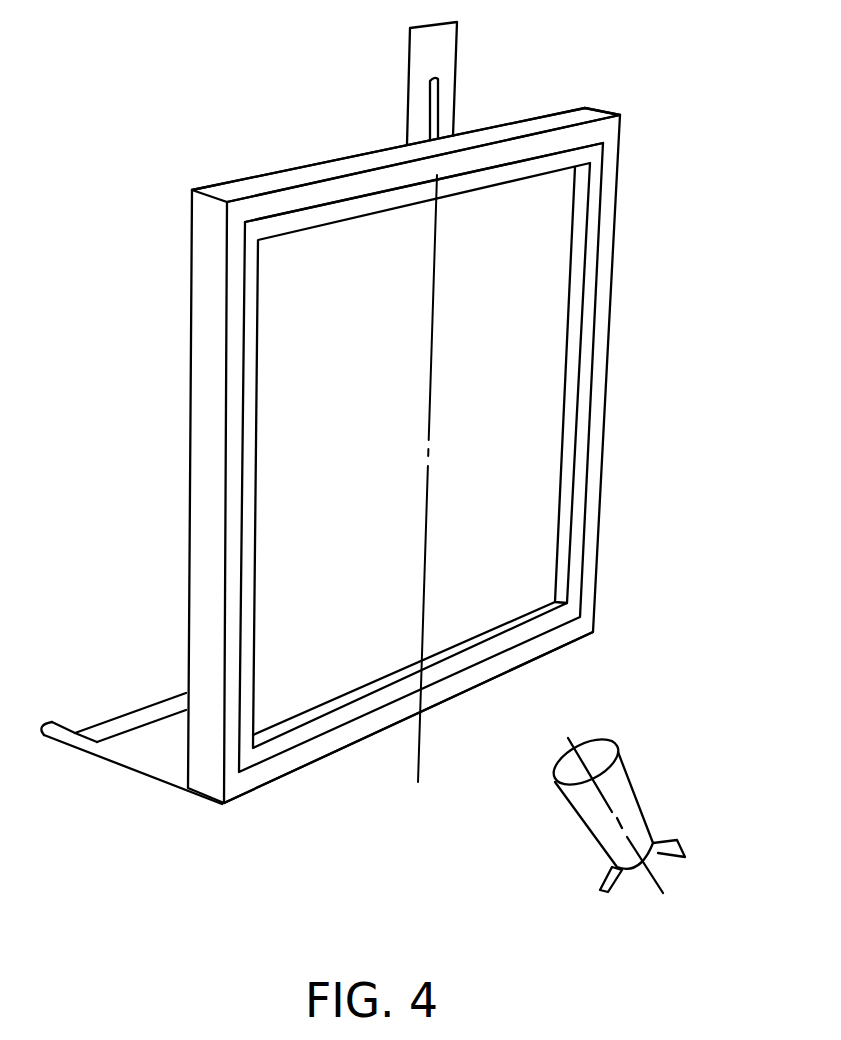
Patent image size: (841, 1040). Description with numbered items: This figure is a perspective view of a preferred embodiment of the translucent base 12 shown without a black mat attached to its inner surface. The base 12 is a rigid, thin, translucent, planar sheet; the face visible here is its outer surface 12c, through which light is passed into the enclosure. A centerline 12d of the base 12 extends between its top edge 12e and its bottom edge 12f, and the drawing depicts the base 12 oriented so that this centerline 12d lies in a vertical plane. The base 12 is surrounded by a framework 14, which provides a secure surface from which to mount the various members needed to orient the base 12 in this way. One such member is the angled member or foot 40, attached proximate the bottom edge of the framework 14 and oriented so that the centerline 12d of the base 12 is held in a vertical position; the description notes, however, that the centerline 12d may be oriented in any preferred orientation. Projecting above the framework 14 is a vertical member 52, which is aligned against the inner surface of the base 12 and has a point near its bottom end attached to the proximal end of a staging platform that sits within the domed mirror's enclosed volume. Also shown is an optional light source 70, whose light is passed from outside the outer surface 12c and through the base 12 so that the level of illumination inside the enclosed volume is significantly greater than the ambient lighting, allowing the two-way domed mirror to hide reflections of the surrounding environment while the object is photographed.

The translucent base 12 is at (293, 437).
The outer surface 12c is at (535, 343).
The centerline 12d is at (421, 758).
The top edge 12e is at (303, 230).
The bottom edge 12f is at (338, 752).
The framework 14 is at (562, 138).
The foot 40 is at (105, 758).
The vertical member 52 is at (443, 55).
The light source 70 is at (622, 792).